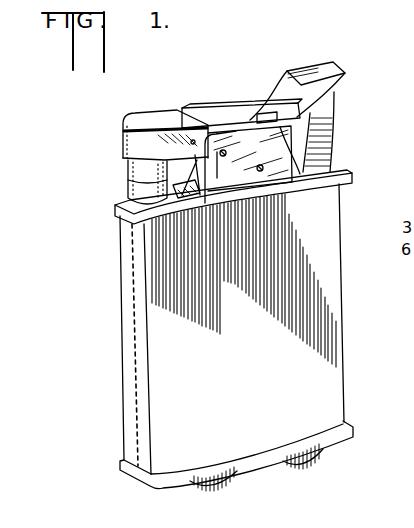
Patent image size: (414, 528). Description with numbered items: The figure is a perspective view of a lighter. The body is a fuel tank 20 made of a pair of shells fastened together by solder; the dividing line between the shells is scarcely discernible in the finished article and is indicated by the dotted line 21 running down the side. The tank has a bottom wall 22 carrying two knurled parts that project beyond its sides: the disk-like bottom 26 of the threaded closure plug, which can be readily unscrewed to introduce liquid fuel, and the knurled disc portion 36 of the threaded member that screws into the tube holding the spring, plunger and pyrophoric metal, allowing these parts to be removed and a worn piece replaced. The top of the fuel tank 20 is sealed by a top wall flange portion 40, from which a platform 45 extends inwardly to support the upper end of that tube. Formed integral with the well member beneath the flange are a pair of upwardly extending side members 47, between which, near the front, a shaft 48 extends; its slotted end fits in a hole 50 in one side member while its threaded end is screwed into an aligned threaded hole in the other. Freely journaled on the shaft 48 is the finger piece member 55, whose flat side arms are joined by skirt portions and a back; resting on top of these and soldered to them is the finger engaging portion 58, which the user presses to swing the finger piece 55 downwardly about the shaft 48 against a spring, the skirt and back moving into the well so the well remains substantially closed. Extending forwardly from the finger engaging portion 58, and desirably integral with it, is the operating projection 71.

The fuel tank 20 is at (115, 269).
The dotted line 21 is at (134, 346).
The bottom wall 22 is at (162, 487).
The disk-like bottom 26 is at (317, 456).
The knurled disc portion 36 is at (222, 482).
The top wall flange portion 40 is at (328, 170).
The platform 45 is at (166, 185).
The side members 47 is at (250, 158).
The shaft 48 is at (221, 150).
The hole 50 is at (218, 173).
The finger piece member 55 is at (336, 97).
The finger engaging portion 58 is at (286, 94).
The operating projection 71 is at (258, 110).